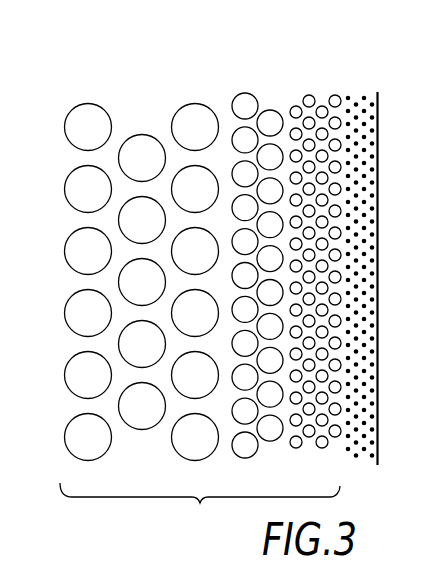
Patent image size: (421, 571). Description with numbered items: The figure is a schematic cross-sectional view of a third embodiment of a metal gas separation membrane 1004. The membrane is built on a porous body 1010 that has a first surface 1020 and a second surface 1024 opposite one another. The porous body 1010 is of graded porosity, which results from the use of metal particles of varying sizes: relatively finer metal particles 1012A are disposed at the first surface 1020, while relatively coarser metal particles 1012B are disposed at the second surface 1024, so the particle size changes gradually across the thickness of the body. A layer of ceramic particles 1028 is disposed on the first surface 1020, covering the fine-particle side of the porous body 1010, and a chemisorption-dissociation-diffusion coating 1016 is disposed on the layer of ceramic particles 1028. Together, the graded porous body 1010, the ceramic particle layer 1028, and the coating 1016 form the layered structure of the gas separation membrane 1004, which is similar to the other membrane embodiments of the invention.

The metal gas separation membrane 1004 is at (204, 82).
The relatively coarser metal particles 1012B is at (107, 82).
The relatively finer metal particles 1012A is at (308, 95).
The second surface 1024 is at (82, 280).
The first surface 1020 is at (343, 108).
The layer of ceramic particles 1028 is at (357, 455).
The chemisorption-dissociation-diffusion coating 1016 is at (380, 441).
The porous body 1010 is at (200, 508).